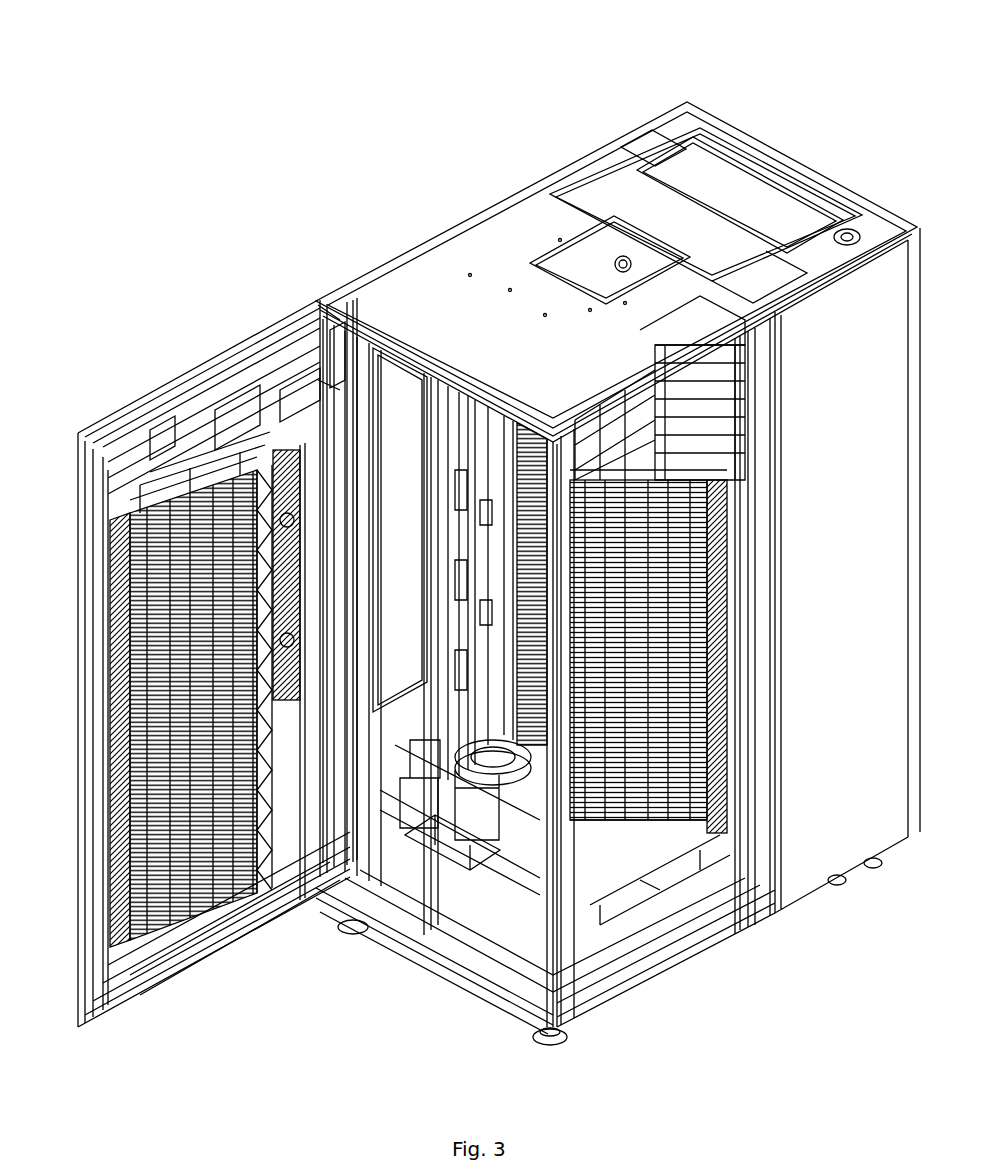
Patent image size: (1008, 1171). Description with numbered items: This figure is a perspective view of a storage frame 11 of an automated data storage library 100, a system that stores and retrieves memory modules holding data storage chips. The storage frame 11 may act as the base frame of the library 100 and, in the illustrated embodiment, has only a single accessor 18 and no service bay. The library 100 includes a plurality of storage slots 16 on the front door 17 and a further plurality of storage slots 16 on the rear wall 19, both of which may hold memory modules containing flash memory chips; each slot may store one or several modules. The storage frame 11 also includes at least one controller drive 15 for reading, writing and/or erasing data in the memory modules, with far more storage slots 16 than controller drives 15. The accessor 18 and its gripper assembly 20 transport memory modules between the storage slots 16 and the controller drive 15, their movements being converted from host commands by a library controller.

The automated data storage library 100 is at (200, 107).
The storage frame 11 is at (395, 981).
The controller drive 15 is at (707, 447).
The storage slots 16 is at (110, 835).
The front door 17 is at (95, 630).
The accessor 18 is at (470, 847).
The rear wall 19 is at (477, 447).
The gripper assembly 20 is at (503, 837).